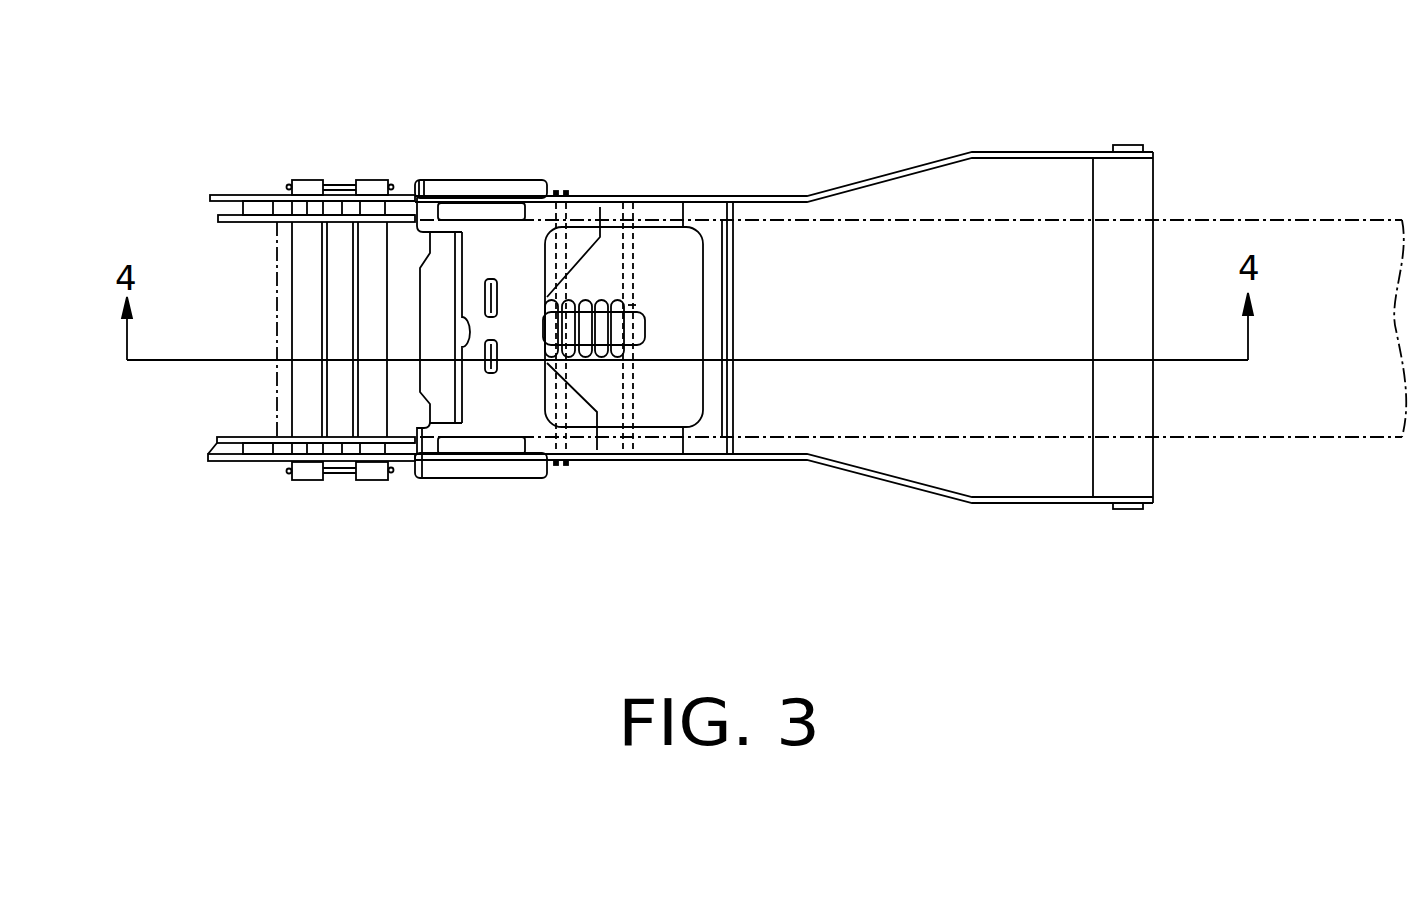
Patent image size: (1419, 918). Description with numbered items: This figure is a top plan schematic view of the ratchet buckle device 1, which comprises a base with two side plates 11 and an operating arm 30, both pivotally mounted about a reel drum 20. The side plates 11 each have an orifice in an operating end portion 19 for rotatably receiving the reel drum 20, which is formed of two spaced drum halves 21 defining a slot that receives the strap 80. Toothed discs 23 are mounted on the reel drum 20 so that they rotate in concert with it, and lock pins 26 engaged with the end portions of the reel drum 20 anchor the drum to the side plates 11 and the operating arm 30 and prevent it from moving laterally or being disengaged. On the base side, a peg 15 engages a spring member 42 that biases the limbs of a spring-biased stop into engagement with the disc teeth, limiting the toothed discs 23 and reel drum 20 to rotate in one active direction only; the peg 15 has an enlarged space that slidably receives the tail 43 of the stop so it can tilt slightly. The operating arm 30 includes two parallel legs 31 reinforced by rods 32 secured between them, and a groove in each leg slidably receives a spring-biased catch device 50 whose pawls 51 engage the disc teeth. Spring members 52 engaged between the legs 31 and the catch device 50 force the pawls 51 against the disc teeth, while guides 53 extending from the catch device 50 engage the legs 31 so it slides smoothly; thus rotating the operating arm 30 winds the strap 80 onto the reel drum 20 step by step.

The ratchet buckle device 1 is at (780, 103).
The side plates 11 is at (238, 440).
The peg 15 is at (633, 305).
The operating end portion 19 is at (213, 440).
The reel drum 20 is at (372, 485).
The drum halves 21 is at (370, 187).
The toothed discs 23 is at (208, 208).
The lock pins 26 is at (288, 474).
The operating arm 30 is at (1073, 505).
The legs 31 is at (893, 483).
The rods 32 is at (1143, 182).
The spring member 42 is at (595, 300).
The tail 43 is at (645, 332).
The spring-biased catch device 50 is at (528, 257).
The pawls 51 is at (436, 190).
The spring members 52 is at (492, 280).
The guides 53 is at (483, 447).
The strap 80 is at (283, 312).